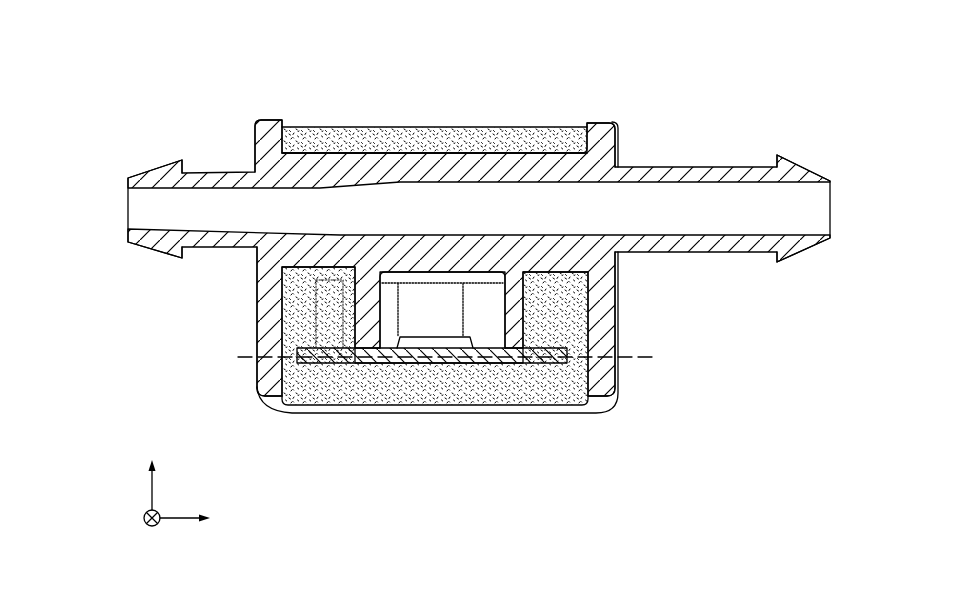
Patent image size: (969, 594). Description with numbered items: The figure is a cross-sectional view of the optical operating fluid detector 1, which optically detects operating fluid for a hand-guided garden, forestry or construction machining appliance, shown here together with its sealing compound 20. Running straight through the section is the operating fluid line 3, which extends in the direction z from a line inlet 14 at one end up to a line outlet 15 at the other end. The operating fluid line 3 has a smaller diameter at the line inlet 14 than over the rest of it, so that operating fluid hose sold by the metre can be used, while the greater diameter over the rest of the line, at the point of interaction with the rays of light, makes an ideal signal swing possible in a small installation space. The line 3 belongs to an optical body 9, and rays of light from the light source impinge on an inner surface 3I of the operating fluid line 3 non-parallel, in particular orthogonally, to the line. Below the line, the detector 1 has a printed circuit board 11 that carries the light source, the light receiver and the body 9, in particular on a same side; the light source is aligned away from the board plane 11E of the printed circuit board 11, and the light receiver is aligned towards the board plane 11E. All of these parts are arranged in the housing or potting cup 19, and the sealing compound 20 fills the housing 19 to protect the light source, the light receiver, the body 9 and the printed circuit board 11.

The optical operating fluid detector 1 is at (151, 105).
The operating fluid line 3 is at (412, 178).
The inner surface of the operating fluid line 3I is at (449, 178).
The optical body 9 is at (357, 163).
The printed circuit board 11 is at (327, 360).
The board plane 11E is at (248, 358).
The line inlet 14 is at (126, 178).
The line outlet 15 is at (830, 180).
The housing 19 is at (257, 316).
The sealing compound 20 is at (298, 140).